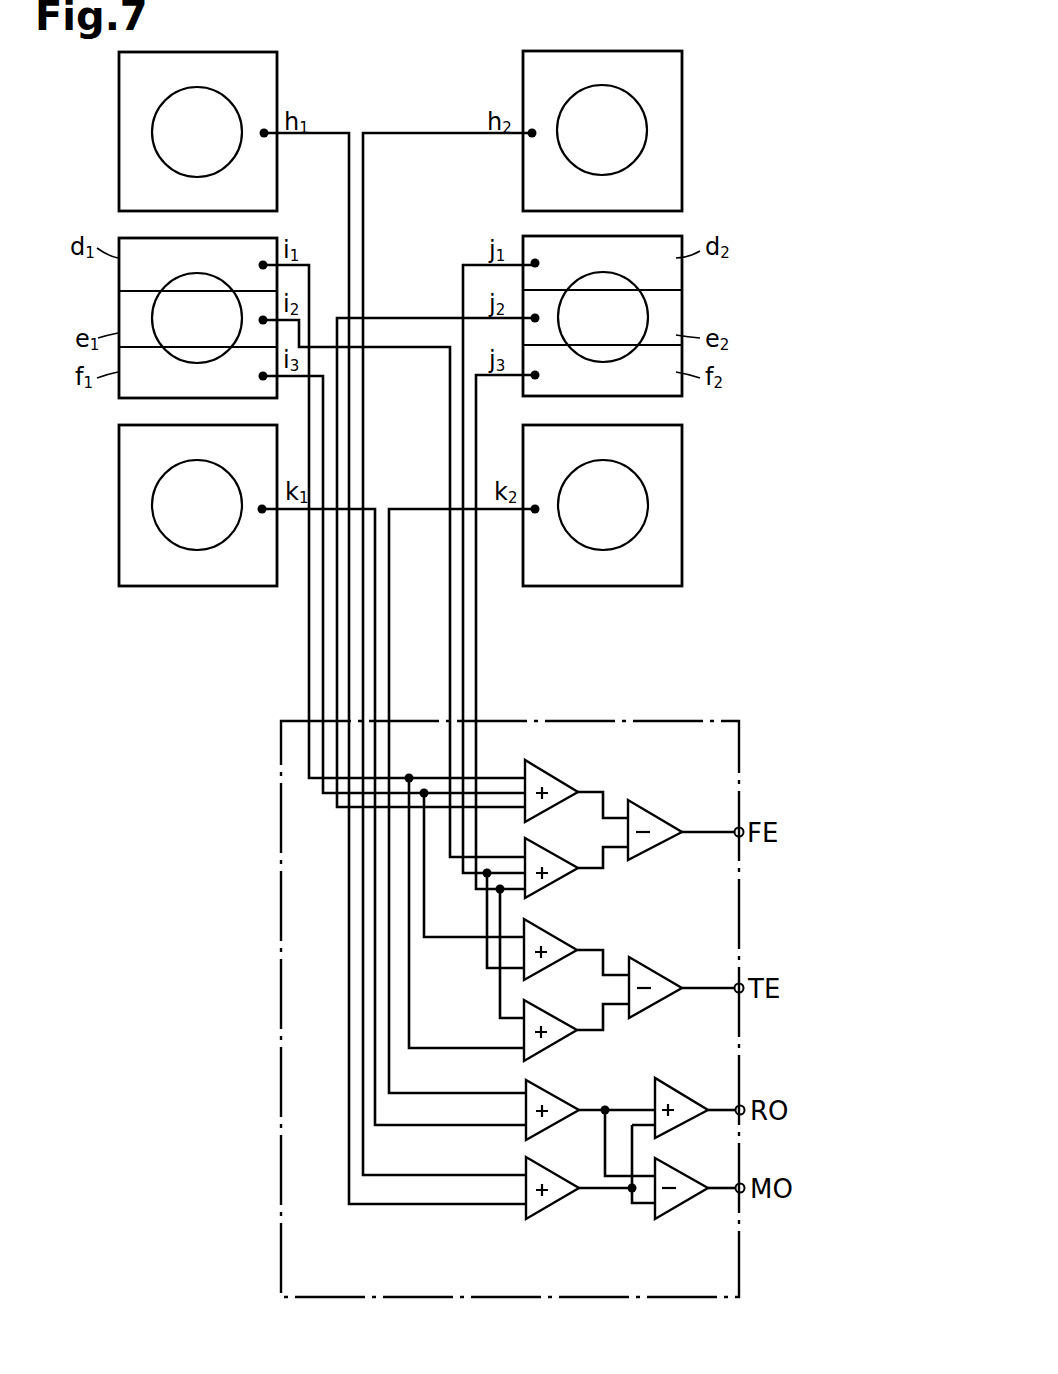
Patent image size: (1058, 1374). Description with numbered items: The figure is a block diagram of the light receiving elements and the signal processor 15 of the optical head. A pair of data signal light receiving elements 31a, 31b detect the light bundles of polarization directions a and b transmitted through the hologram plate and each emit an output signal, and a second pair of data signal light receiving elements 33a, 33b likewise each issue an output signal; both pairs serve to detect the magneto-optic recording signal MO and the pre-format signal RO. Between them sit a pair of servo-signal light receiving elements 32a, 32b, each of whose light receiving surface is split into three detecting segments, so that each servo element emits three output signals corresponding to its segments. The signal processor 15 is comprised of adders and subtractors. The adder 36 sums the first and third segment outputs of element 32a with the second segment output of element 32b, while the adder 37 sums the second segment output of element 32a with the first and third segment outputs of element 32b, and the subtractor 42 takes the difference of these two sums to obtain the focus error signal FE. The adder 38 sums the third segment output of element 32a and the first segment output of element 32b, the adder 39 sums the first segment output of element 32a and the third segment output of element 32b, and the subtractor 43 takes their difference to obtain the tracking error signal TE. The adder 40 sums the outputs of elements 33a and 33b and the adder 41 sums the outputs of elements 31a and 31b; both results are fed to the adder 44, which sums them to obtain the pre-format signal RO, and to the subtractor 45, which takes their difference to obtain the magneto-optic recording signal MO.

The signal processor 15 is at (596, 720).
The data signal light receiving element 31a is at (118, 138).
The data signal light receiving element 31b is at (684, 127).
The servo-signal light receiving element 32a is at (118, 310).
The servo-signal light receiving element 32b is at (685, 310).
The data signal light receiving element 33a is at (118, 510).
The data signal light receiving element 33b is at (684, 500).
The adder 36 is at (546, 776).
The adder 37 is at (547, 861).
The adder 38 is at (553, 941).
The adder 39 is at (551, 1018).
The adder 40 is at (553, 1097).
The adder 41 is at (548, 1175).
The subtractor 42 is at (657, 817).
The subtractor 43 is at (651, 969).
The adder 44 is at (681, 1091).
The subtractor 45 is at (681, 1180).